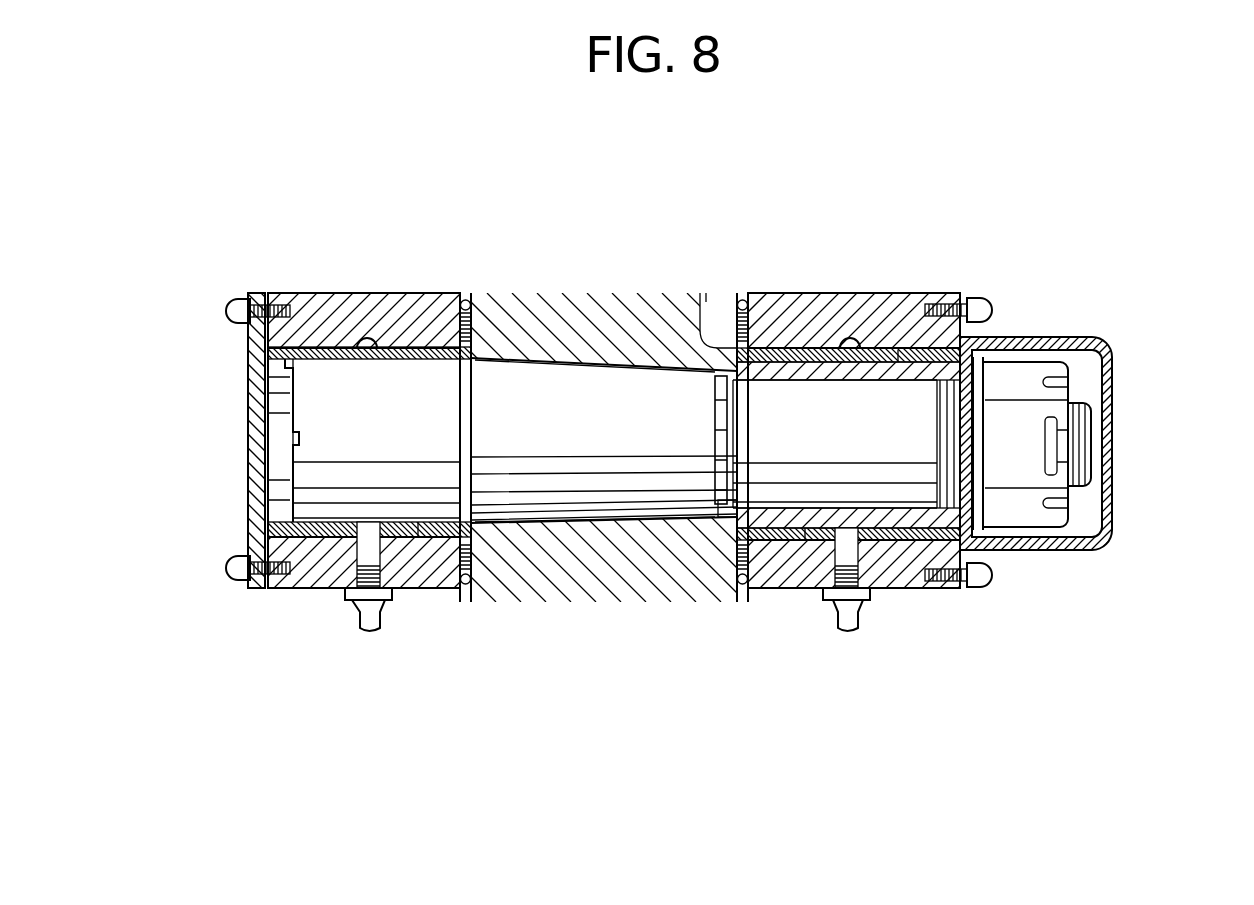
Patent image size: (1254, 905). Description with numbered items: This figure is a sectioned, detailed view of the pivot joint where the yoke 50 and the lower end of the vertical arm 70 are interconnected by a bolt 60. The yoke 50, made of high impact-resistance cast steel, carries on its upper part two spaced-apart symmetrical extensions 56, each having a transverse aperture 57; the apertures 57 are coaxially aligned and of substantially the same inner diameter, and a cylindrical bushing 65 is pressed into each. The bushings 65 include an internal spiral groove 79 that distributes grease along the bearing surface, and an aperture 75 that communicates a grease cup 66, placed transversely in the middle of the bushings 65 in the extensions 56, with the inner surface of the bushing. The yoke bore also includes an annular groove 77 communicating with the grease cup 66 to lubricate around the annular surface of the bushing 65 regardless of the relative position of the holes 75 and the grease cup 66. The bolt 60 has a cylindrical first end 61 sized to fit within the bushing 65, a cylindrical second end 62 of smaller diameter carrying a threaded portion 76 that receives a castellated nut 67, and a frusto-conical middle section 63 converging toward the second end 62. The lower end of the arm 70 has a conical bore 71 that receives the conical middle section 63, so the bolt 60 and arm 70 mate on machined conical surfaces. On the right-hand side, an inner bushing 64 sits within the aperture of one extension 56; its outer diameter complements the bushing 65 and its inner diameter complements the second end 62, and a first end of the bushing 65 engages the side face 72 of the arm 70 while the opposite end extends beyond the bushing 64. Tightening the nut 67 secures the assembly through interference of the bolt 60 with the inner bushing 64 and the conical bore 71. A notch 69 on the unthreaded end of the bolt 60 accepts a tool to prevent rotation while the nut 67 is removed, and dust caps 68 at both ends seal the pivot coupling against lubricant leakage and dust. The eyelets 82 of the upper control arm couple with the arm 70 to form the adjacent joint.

The yoke 50 is at (381, 285).
The symmetrical extensions 56 is at (293, 590).
The transverse aperture 57 is at (315, 590).
The bolt 60 is at (581, 400).
The cylindrical first end 61 is at (430, 378).
The cylindrical second end 62 is at (753, 477).
The middle section 63 is at (578, 500).
The inner bushing 64 is at (963, 390).
The cylindrical bushing 65 is at (303, 332).
The grease cup 66 is at (360, 612).
The castellated nut 67 is at (1035, 518).
The dust cap 68 is at (236, 458).
The notch 69 is at (278, 440).
The vertical arm 70 is at (615, 293).
The conical bore 71 is at (527, 360).
The side face 72 is at (706, 293).
The aperture 75 is at (368, 522).
The threaded portion 76 is at (1040, 385).
The annular groove 77 is at (368, 340).
The internal spiral groove 79 is at (903, 350).
The eyelets 82 is at (277, 590).